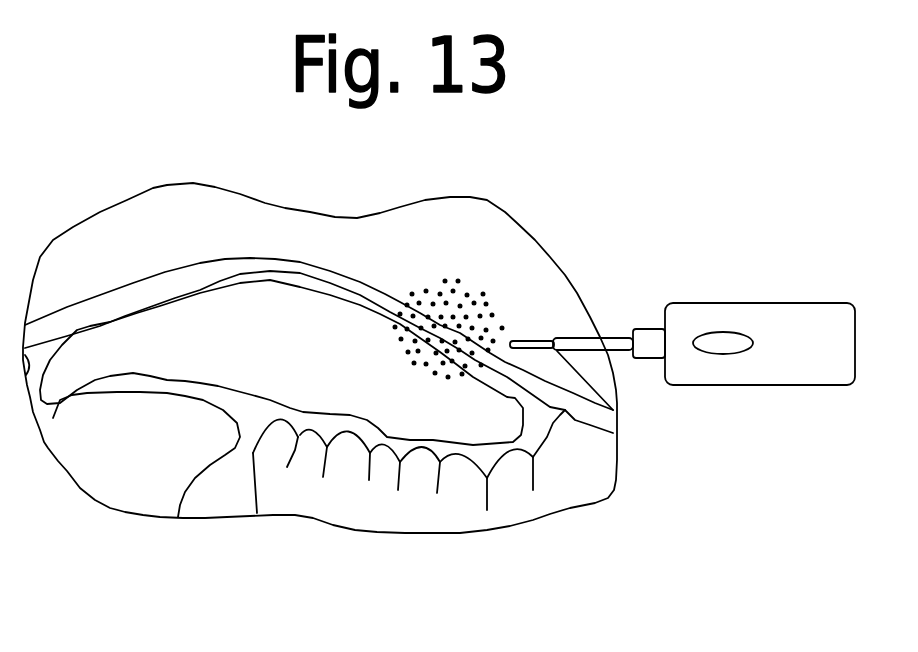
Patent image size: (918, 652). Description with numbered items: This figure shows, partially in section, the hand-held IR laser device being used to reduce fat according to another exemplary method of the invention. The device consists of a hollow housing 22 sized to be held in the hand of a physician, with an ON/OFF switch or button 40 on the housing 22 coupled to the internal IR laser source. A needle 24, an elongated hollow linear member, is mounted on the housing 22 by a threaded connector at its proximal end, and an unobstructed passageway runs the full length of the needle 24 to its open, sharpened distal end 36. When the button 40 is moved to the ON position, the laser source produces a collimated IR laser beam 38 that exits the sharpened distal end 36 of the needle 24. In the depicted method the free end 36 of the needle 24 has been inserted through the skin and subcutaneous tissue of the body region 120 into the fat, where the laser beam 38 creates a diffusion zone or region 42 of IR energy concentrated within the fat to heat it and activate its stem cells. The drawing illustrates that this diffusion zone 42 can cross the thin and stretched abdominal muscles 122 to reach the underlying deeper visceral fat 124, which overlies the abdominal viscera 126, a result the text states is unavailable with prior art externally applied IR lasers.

The housing 22 is at (773, 332).
The needle 24 is at (600, 340).
The distal end of the needle 36 is at (613, 410).
The IR laser beam 38 is at (542, 340).
The ON/OFF switch or button 40 is at (728, 345).
The diffusion zone or region 42 is at (490, 313).
The head of subject 120 is at (482, 260).
The abdominal muscles 122 is at (295, 273).
The visceral fat 124 is at (185, 348).
The abdominal viscera 126 is at (197, 433).